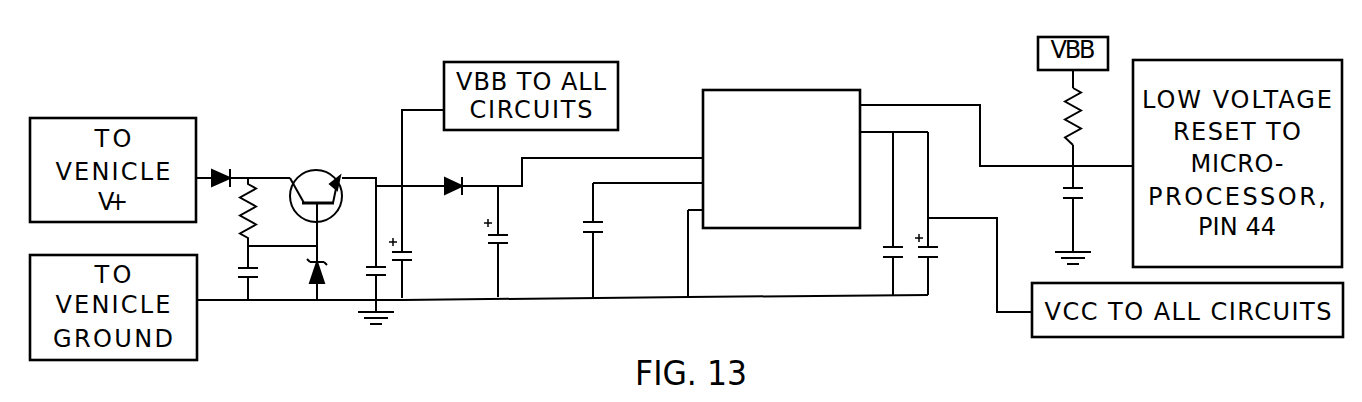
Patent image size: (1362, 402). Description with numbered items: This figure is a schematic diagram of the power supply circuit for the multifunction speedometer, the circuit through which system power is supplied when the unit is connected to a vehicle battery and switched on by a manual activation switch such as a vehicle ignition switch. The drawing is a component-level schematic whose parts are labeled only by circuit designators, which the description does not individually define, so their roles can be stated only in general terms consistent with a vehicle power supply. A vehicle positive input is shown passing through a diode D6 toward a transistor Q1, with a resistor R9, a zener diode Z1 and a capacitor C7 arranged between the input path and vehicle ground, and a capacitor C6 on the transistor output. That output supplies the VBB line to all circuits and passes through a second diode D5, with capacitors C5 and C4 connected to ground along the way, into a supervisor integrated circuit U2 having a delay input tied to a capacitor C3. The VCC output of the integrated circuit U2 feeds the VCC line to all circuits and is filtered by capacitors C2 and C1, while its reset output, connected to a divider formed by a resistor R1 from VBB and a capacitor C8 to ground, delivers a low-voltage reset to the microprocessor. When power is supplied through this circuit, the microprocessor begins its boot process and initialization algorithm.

The diode D6 is at (218, 166).
The resistor R9 is at (230, 212).
The transistor Q1 is at (315, 205).
The capacitor C7 is at (230, 273).
The zener diode Z1 is at (303, 279).
The capacitor C6 is at (364, 259).
The capacitor C5 470 uF C5 is at (438, 242).
The diode D5 is at (453, 172).
The capacitor C4 470 uF C4 is at (534, 241).
The capacitor C3 3.3 uF C3 is at (629, 240).
The voltage supervisor IC U2 is at (782, 144).
The capacitor C2 is at (874, 213).
The capacitor C1 is at (945, 213).
The resistor R1 is at (1054, 116).
The capacitor C8 is at (1091, 189).